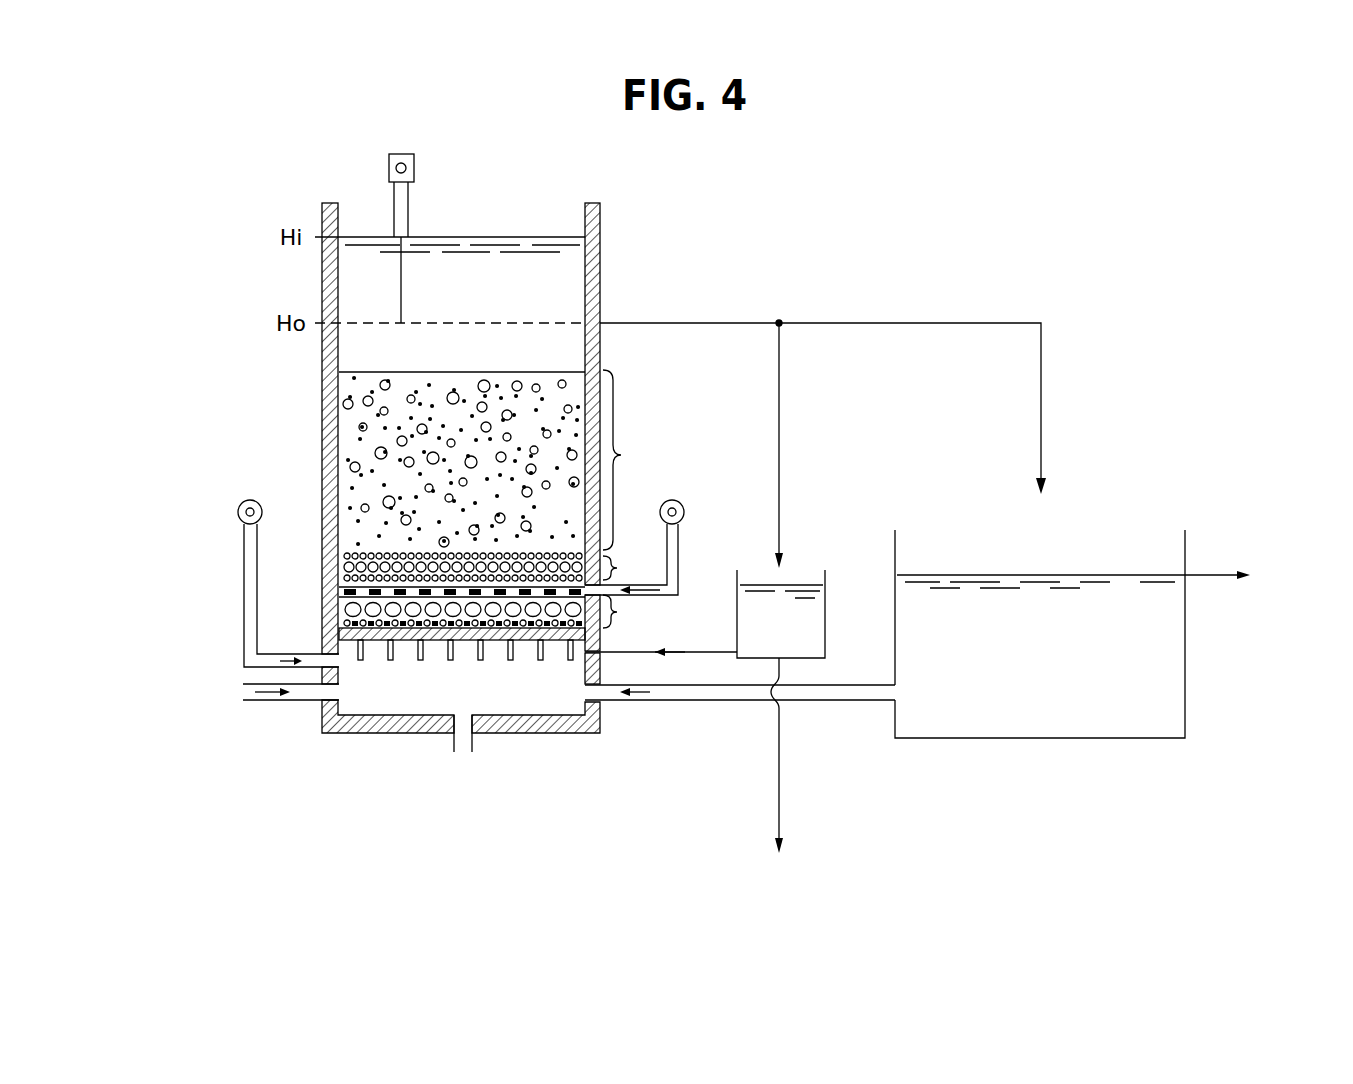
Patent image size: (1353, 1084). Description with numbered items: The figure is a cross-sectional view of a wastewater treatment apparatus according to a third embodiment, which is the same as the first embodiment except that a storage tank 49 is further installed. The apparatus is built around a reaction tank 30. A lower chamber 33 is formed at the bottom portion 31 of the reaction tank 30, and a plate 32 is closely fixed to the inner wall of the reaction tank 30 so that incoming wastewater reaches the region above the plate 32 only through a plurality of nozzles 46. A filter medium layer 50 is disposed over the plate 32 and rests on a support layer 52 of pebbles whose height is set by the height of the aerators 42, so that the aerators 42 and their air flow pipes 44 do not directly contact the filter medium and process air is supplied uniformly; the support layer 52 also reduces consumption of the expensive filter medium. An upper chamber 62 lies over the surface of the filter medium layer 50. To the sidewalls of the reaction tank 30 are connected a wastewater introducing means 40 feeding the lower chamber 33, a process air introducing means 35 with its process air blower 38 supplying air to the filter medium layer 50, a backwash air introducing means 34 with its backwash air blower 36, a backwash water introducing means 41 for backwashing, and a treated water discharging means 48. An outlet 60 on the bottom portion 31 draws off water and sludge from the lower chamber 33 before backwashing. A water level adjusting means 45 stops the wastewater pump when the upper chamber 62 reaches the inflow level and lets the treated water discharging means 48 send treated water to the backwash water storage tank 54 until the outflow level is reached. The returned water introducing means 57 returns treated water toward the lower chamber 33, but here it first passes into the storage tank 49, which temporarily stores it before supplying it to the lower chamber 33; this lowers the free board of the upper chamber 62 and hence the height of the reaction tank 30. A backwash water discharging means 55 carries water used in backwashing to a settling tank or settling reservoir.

The reaction tank 30 is at (322, 446).
The bottom portion 31 is at (380, 733).
The plate 32 is at (339, 632).
The lower chamber 33 is at (512, 705).
The backwash air introducing means 34 is at (240, 628).
The process air introducing means 35 is at (680, 547).
The backwash air blower 36 is at (237, 512).
The process air blower 38 is at (688, 512).
The wastewater introducing means 40 is at (298, 703).
The backwash water introducing means 41 is at (637, 702).
The aerators 42 is at (348, 580).
The air flow pipes 44 is at (350, 592).
The water level adjusting means 45 is at (388, 170).
The nozzles 46 is at (360, 660).
The treated water discharging means 48 is at (908, 323).
The storage tank 49 is at (826, 612).
The filter medium layer 50 is at (497, 460).
The support layer 52 is at (499, 567).
The backwash water storage tank 54 is at (1187, 670).
The backwash water discharging means 55 is at (782, 785).
The returned water introducing means 57 is at (780, 440).
The outlet 60 is at (455, 748).
The upper chamber 62 is at (491, 213).